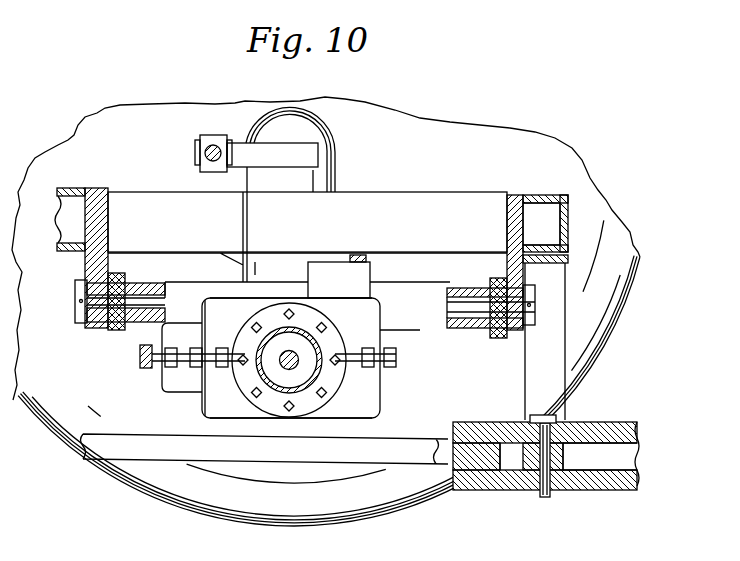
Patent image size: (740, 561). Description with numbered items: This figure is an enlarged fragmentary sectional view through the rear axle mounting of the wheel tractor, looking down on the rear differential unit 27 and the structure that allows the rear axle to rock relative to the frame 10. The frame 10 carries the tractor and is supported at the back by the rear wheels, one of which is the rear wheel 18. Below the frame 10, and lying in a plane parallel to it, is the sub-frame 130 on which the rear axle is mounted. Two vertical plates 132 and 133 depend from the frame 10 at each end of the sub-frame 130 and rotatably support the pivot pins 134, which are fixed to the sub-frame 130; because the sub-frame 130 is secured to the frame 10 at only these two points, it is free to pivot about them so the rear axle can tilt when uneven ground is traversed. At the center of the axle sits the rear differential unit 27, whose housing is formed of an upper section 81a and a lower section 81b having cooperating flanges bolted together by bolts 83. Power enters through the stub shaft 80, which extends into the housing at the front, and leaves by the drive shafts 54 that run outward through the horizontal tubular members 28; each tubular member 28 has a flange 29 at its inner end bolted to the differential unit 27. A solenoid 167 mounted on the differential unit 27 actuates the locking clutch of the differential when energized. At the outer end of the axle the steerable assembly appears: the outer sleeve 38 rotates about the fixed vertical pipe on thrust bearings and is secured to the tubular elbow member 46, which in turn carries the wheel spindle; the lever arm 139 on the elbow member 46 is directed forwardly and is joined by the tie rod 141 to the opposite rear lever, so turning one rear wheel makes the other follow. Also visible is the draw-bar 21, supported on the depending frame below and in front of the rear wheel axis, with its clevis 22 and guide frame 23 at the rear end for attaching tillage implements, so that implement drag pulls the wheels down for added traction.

The rear wheel 18 is at (97, 113).
The frame 10 is at (428, 200).
The draw-bar 21 is at (108, 448).
The clevis 22 is at (638, 455).
The guide frame 23 is at (552, 403).
The rear differential unit 27 is at (390, 388).
The horizontal tubular member 28 is at (318, 376).
The flange 29 is at (277, 402).
The sleeve 38 is at (250, 272).
The tubular elbow member 46 is at (313, 142).
The drive shaft 54 is at (300, 365).
The stub shaft 80 is at (140, 357).
The upper section 81a is at (236, 325).
The lower section 81b is at (291, 403).
The bolts 83 is at (375, 348).
The sub-frame 130 is at (408, 328).
The vertical plate 132 is at (106, 190).
The vertical plate 133 is at (570, 180).
The pivot pin 134 is at (78, 295).
The lever arm 139 is at (243, 148).
The tie rod 141 is at (203, 152).
The solenoid 167 is at (355, 280).